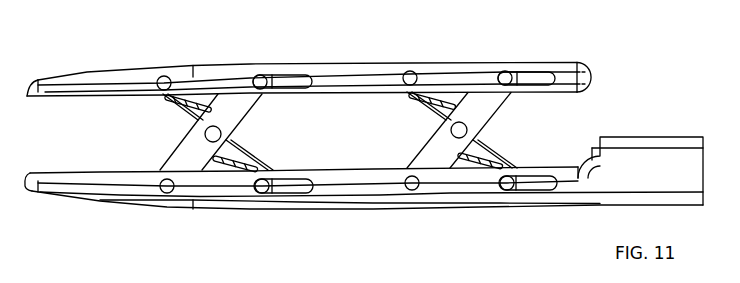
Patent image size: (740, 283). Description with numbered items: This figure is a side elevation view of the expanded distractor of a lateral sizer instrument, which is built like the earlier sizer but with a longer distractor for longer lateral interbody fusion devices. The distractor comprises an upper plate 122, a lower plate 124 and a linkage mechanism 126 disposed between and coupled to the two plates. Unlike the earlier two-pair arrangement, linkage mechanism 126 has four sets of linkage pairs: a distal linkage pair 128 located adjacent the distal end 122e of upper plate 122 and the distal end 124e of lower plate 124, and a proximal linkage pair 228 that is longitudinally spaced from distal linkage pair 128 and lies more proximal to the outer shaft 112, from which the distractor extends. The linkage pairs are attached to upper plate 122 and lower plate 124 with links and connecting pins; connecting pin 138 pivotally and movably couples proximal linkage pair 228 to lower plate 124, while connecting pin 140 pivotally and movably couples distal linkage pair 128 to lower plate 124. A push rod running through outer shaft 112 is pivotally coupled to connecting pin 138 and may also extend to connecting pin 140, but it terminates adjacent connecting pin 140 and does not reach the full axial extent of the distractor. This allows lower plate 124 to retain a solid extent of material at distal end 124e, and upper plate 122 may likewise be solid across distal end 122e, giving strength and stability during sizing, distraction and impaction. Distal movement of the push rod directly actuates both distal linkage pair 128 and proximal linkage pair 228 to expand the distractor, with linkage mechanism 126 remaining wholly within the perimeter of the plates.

The outer shaft 112 is at (667, 136).
The upper plate 122 is at (353, 64).
The distal end of upper plate 122e is at (87, 72).
The lower plate 124 is at (373, 208).
The distal end of lower plate 124e is at (96, 203).
The linkage mechanism 126 is at (138, 140).
The distal linkage pair 128 is at (212, 186).
The connecting pin 140 is at (265, 194).
The proximal linkage pair 228 is at (461, 182).
The connecting pin 138 is at (510, 189).